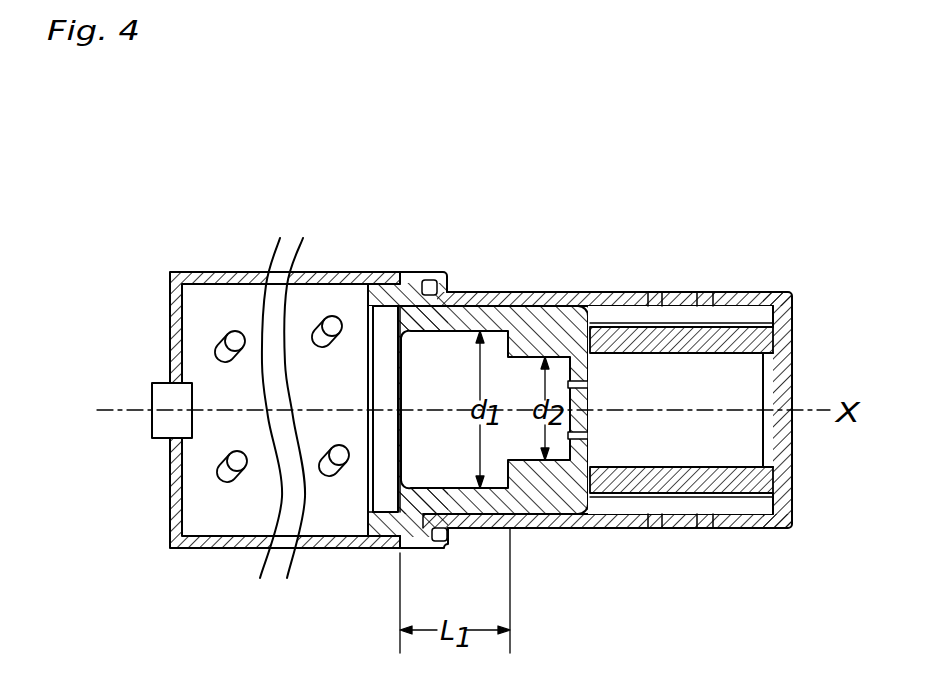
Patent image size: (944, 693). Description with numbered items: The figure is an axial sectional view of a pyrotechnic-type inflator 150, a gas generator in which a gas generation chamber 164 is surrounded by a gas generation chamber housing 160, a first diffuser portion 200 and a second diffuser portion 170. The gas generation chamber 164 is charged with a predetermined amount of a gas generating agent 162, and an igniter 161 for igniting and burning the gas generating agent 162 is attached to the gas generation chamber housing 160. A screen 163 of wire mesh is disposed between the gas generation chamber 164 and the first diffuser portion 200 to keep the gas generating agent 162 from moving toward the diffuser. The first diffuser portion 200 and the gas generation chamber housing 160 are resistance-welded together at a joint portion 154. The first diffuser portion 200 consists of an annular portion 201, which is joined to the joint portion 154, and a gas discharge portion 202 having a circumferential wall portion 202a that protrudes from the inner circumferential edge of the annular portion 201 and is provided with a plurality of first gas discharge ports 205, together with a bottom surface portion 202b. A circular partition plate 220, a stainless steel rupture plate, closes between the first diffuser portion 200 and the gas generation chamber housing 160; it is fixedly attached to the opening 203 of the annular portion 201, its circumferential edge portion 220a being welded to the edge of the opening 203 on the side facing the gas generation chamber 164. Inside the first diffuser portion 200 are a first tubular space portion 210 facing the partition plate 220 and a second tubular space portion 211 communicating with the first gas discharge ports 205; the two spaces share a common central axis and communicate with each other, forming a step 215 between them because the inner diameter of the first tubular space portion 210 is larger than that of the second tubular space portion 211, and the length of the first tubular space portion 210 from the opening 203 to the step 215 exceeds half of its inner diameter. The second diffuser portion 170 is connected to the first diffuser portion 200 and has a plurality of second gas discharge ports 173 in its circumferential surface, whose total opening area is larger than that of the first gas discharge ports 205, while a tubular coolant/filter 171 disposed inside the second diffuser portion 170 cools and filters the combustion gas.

The pyrotechnic-type inflator 150 is at (640, 260).
The joint portion 154 is at (388, 272).
The gas generation chamber housing 160 is at (215, 272).
The igniter 161 is at (152, 420).
The gas generating agent 162 is at (223, 333).
The screen (wire mesh) 163 is at (366, 480).
The gas generation chamber 164 is at (259, 447).
The second diffuser portion 170 is at (607, 443).
The tubular coolant/filter 171 is at (703, 472).
The second gas discharge ports 173 is at (657, 528).
The first diffuser portion 200 is at (532, 201).
The annular portion 201 is at (412, 288).
The gas discharge portion 202 is at (570, 406).
The circumferential wall portion 202a is at (482, 528).
The bottom surface portion 202b is at (592, 375).
The opening 203 is at (368, 432).
The first gas discharge ports 205 is at (592, 438).
The first tubular space portion 210 is at (461, 461).
The second tubular space portion 211 is at (527, 457).
The step 215 is at (510, 343).
The circular partition plate (rupture plate) 220 is at (401, 357).
The circumferential edge portion 220a is at (379, 515).